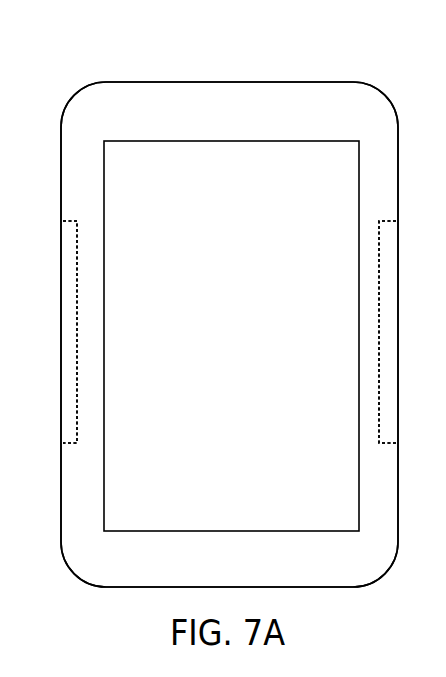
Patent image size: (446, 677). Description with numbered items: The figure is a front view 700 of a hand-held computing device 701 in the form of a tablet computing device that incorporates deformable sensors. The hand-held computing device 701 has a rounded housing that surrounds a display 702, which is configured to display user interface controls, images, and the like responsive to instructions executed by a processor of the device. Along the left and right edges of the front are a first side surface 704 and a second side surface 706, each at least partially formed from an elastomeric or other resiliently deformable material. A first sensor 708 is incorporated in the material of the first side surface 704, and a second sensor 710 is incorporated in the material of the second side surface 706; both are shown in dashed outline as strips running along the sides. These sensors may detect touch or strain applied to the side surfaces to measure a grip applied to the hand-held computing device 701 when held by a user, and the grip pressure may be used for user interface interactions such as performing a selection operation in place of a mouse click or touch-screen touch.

The front view 700 is at (340, 44).
The hand-held computing device 701 is at (348, 93).
The display 702 is at (248, 343).
The first side surface 704 is at (70, 212).
The second side surface 706 is at (390, 213).
The first sensor 708 is at (68, 285).
The second sensor 710 is at (390, 267).